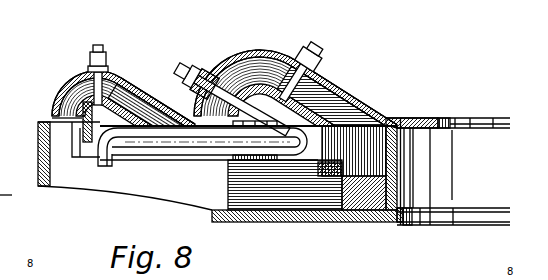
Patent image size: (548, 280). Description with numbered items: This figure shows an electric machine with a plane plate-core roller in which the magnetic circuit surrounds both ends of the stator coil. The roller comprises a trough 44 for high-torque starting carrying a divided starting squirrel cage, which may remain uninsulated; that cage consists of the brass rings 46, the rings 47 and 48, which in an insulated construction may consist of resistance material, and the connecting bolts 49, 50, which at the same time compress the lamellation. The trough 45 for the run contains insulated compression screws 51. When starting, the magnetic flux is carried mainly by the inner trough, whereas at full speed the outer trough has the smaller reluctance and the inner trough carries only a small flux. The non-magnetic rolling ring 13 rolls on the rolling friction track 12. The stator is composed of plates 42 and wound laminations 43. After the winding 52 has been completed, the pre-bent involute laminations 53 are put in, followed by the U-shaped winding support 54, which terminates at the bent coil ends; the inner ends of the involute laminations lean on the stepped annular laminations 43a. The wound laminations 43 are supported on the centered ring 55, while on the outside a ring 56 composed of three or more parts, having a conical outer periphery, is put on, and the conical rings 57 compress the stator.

The rolling friction track 12 is at (55, 110).
The non-magnetic rolling ring 13 is at (63, 92).
The stator plates 42 is at (405, 117).
The wound laminations 43 is at (386, 114).
The annular laminations 43a is at (303, 186).
The trough 44 is at (345, 108).
The trough 45 is at (128, 84).
The brass rings 46 is at (118, 82).
The ring 47 is at (207, 62).
The ring 48 is at (318, 58).
The connecting bolt 49 is at (231, 75).
The connecting bolt 50 is at (284, 70).
The insulated compression screws 51 is at (104, 62).
The winding 52 is at (110, 152).
The involute laminations 53 is at (73, 172).
The U-shaped winding support 54 is at (157, 153).
The centered ring 55 is at (397, 218).
The ring 56 is at (42, 124).
The conical rings 57 is at (42, 187).